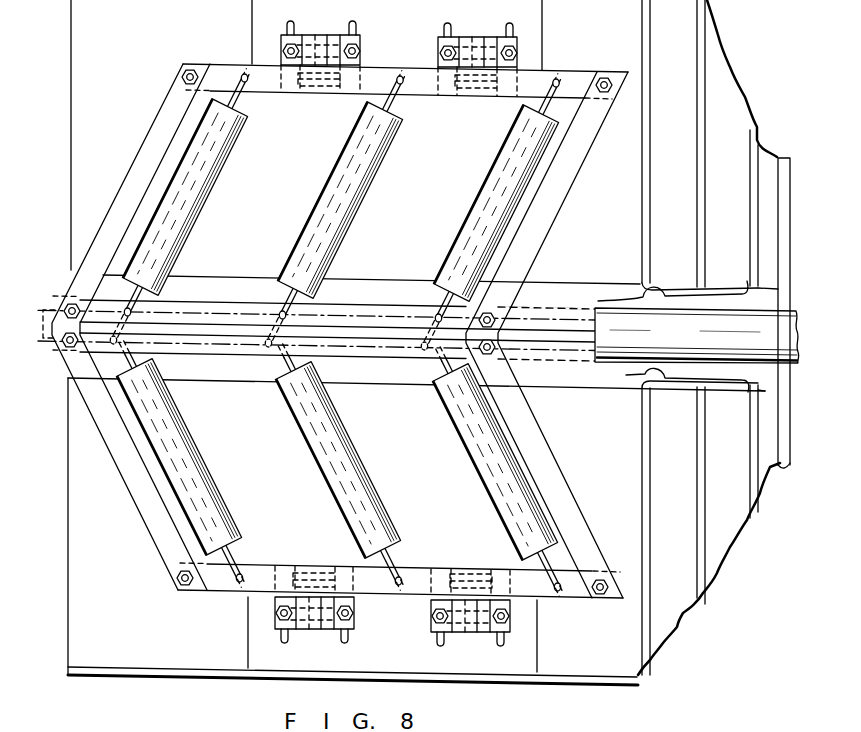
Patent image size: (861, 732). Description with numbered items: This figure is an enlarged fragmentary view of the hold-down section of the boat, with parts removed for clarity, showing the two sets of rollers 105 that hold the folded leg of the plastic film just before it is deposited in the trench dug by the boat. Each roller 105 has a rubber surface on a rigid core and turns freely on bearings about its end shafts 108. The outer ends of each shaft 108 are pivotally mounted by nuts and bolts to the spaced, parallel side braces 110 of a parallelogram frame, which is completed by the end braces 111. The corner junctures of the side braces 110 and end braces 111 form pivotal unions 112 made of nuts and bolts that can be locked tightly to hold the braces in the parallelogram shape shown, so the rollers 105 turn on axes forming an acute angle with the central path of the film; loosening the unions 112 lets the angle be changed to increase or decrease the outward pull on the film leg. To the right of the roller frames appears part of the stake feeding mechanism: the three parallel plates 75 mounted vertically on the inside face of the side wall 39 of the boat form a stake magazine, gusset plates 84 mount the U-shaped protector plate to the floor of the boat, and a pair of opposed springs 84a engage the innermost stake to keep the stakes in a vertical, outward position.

The side wall 39 is at (564, 718).
The parallel plates 75 is at (752, 228).
The gusset plates 84 is at (790, 465).
The opposed springs 84a is at (654, 336).
The rollers 105 is at (213, 179).
The end shafts 108 is at (241, 102).
The side braces 110 is at (403, 333).
The end braces 111 is at (133, 166).
The pivotal unions 112 is at (184, 70).